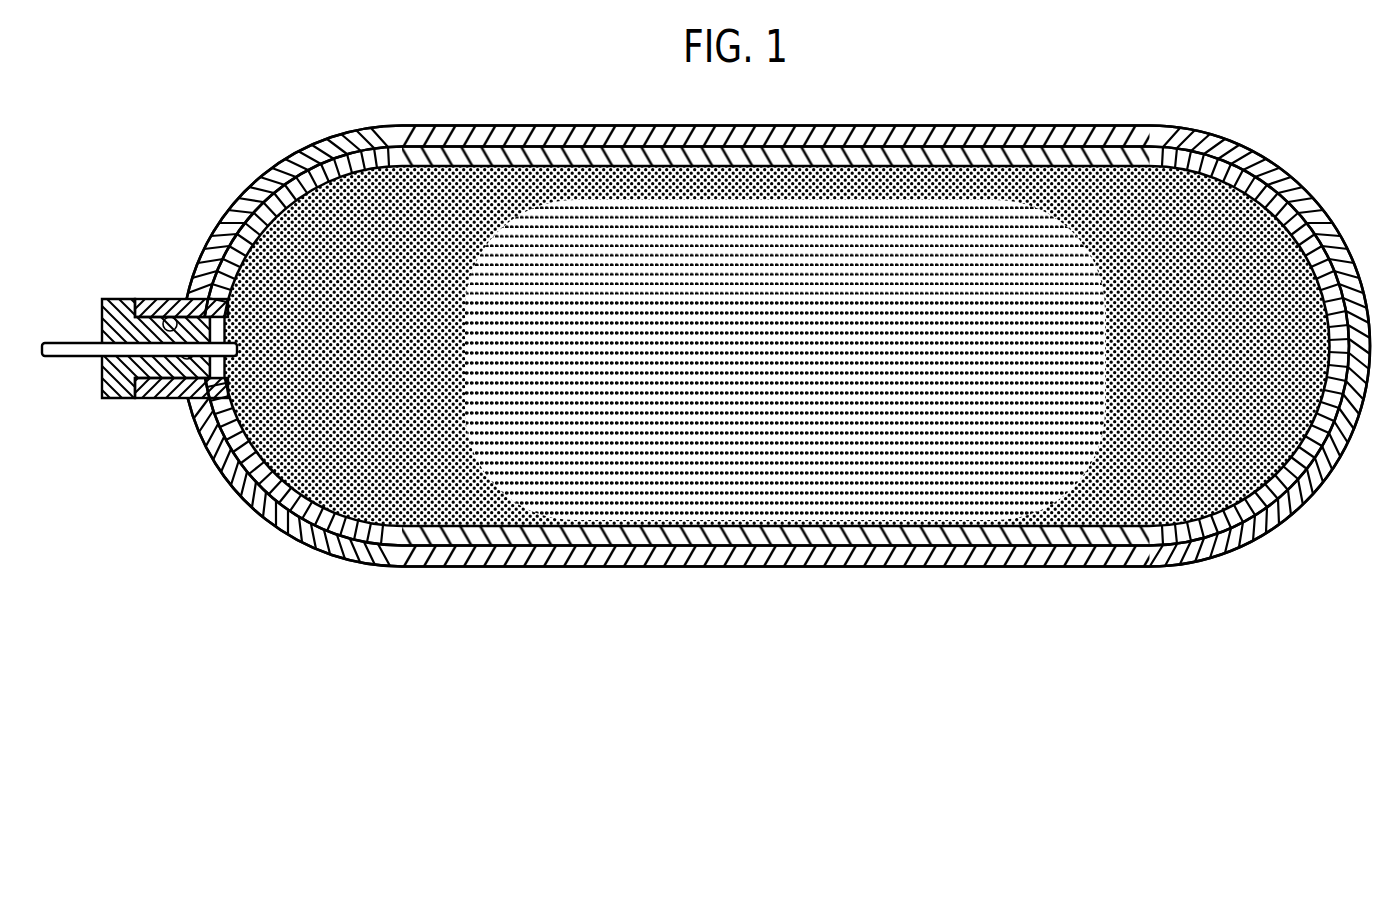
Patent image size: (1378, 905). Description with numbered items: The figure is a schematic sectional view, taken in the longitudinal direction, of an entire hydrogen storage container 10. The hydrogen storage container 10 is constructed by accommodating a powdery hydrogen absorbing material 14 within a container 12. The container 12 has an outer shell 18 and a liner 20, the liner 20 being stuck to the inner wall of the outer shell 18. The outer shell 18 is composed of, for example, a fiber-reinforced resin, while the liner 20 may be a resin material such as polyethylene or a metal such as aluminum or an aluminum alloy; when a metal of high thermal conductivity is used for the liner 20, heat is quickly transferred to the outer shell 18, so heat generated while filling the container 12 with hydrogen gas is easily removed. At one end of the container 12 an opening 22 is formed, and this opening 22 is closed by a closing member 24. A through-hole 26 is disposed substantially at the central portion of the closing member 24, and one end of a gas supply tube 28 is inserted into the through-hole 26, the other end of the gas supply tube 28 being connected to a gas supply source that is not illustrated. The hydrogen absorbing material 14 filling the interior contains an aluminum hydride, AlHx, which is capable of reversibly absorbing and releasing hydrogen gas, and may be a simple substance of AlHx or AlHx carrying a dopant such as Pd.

The hydrogen storage container 10 is at (285, 103).
The container 12 is at (290, 604).
The hydrogen absorbing material 14 is at (508, 208).
The outer shell 18 is at (262, 498).
The liner 20 is at (297, 498).
The opening 22 is at (164, 318).
The closing member 24 is at (122, 383).
The through-hole 26 is at (184, 360).
The gas supply tube 28 is at (68, 346).